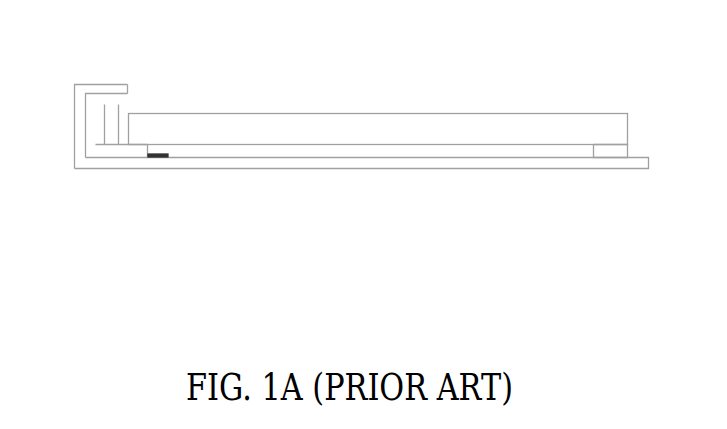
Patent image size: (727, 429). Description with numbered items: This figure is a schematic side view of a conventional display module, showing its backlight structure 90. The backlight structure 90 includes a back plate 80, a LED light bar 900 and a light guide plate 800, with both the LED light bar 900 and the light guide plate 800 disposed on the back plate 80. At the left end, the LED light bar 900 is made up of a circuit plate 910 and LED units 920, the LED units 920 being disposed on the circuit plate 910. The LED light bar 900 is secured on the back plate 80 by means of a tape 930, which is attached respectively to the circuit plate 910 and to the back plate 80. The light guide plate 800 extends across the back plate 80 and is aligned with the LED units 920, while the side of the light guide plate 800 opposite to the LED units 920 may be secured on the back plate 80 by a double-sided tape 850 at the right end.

The backlight structure 90 is at (72, 44).
The back plate 80 is at (640, 163).
The light guide plate 800 is at (543, 122).
The double-sided tape 850 is at (610, 150).
The LED light bar 900 is at (85, 182).
The circuit plate 910 is at (109, 158).
The LED units 920 is at (108, 118).
The tape 930 is at (156, 154).